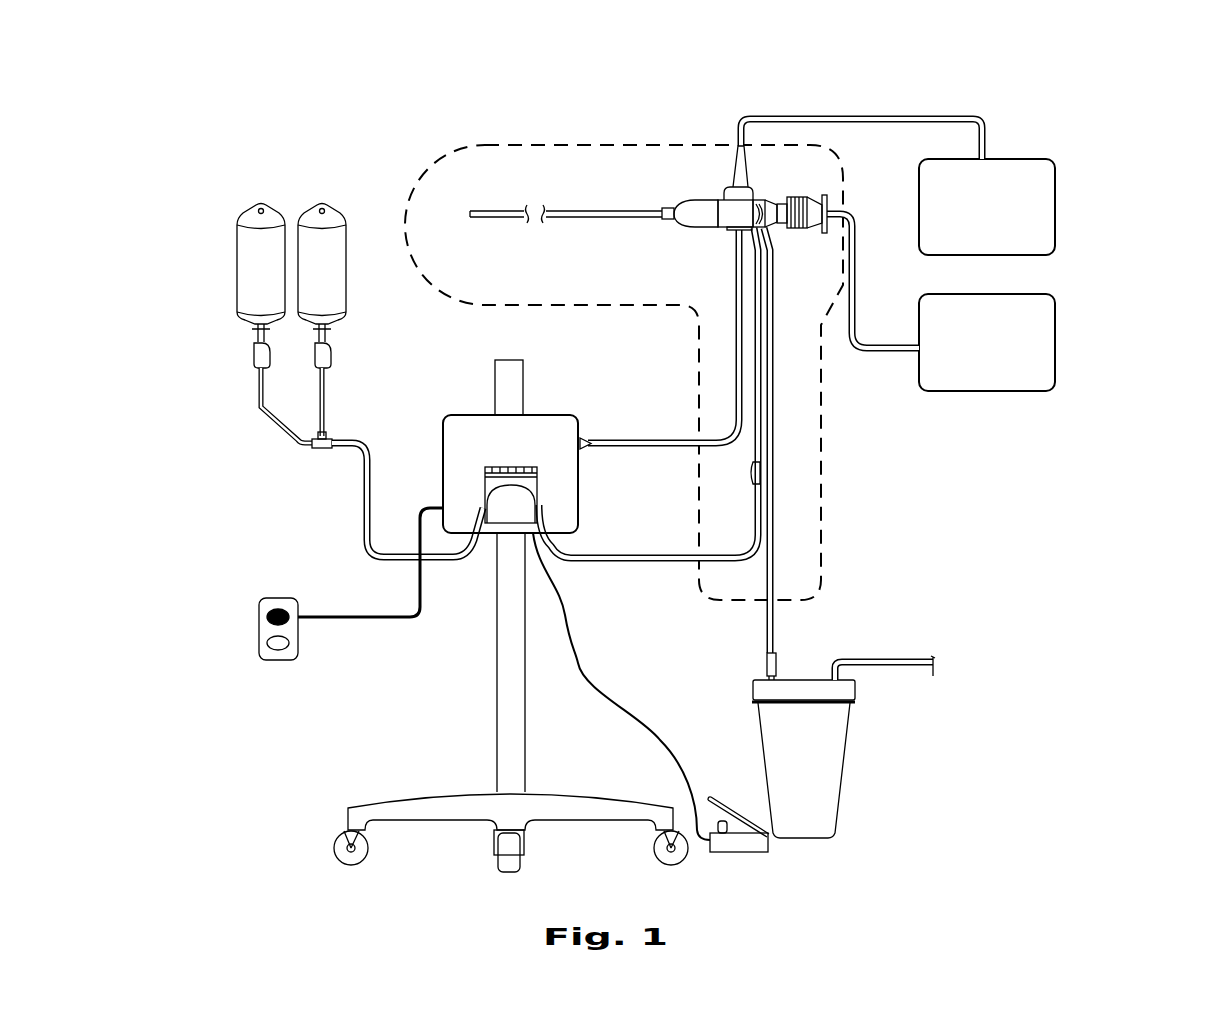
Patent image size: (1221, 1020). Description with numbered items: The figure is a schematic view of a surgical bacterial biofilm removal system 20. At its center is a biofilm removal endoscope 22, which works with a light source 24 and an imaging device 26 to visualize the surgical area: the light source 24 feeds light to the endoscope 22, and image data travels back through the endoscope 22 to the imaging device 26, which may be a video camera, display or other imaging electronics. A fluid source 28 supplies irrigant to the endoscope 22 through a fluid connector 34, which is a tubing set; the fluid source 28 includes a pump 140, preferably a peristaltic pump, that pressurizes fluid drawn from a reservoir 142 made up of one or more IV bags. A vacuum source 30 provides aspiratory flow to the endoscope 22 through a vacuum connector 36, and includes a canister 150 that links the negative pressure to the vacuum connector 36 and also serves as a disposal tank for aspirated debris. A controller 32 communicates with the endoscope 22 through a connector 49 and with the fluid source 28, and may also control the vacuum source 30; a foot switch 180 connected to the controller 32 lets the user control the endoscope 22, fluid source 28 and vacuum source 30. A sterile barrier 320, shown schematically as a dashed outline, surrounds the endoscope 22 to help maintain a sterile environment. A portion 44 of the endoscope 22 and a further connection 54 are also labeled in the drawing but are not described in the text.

The surgical bacterial biofilm removal system 20 is at (1024, 102).
The sterile barrier 320 is at (519, 140).
The biofilm removal endoscope 22 is at (630, 192).
The shaft / working element 44 is at (587, 230).
The light source 24 is at (1058, 204).
The imaging device 26 is at (1058, 341).
The power cable 54 is at (897, 360).
The reservoir 142 is at (230, 270).
The fluid source 28 is at (246, 479).
The controller 32 is at (466, 408).
The connector 49 is at (656, 438).
The pump 140 is at (498, 536).
The fluid connector 34 is at (630, 562).
The vacuum connector 36 is at (781, 630).
The vacuum source 30 is at (896, 698).
The canister 150 is at (823, 815).
The foot switch 180 is at (764, 865).